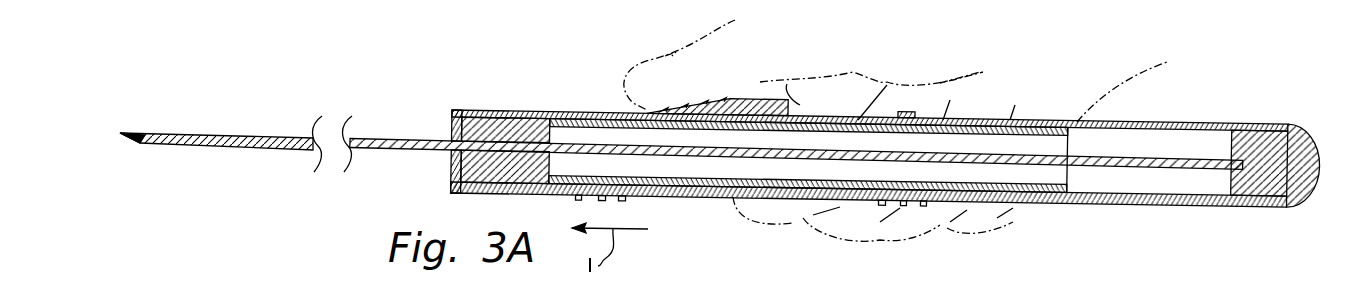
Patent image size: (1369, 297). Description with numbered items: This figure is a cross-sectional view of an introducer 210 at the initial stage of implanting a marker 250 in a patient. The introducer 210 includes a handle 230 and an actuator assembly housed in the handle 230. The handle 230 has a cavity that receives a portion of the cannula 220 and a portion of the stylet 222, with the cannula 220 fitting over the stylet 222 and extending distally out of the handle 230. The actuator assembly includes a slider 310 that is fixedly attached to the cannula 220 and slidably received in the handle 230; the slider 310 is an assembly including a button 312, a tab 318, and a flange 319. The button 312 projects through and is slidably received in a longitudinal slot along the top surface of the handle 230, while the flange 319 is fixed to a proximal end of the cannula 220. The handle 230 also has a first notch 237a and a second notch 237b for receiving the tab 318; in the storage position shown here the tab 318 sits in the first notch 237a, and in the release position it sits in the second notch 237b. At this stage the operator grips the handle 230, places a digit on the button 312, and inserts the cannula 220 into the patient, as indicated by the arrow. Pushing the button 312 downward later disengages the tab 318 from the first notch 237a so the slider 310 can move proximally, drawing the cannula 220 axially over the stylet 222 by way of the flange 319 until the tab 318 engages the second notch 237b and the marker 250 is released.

The introducer 210 is at (1325, 182).
The cannula 220 is at (263, 137).
The stylet 222 is at (223, 148).
The handle 230 is at (1183, 127).
The first notch 237a is at (905, 118).
The second notch 237b is at (993, 122).
The marker 250 is at (148, 144).
The slider 310 is at (532, 118).
The button 312 is at (753, 100).
The tab 318 is at (902, 118).
The flange 319 is at (1033, 163).